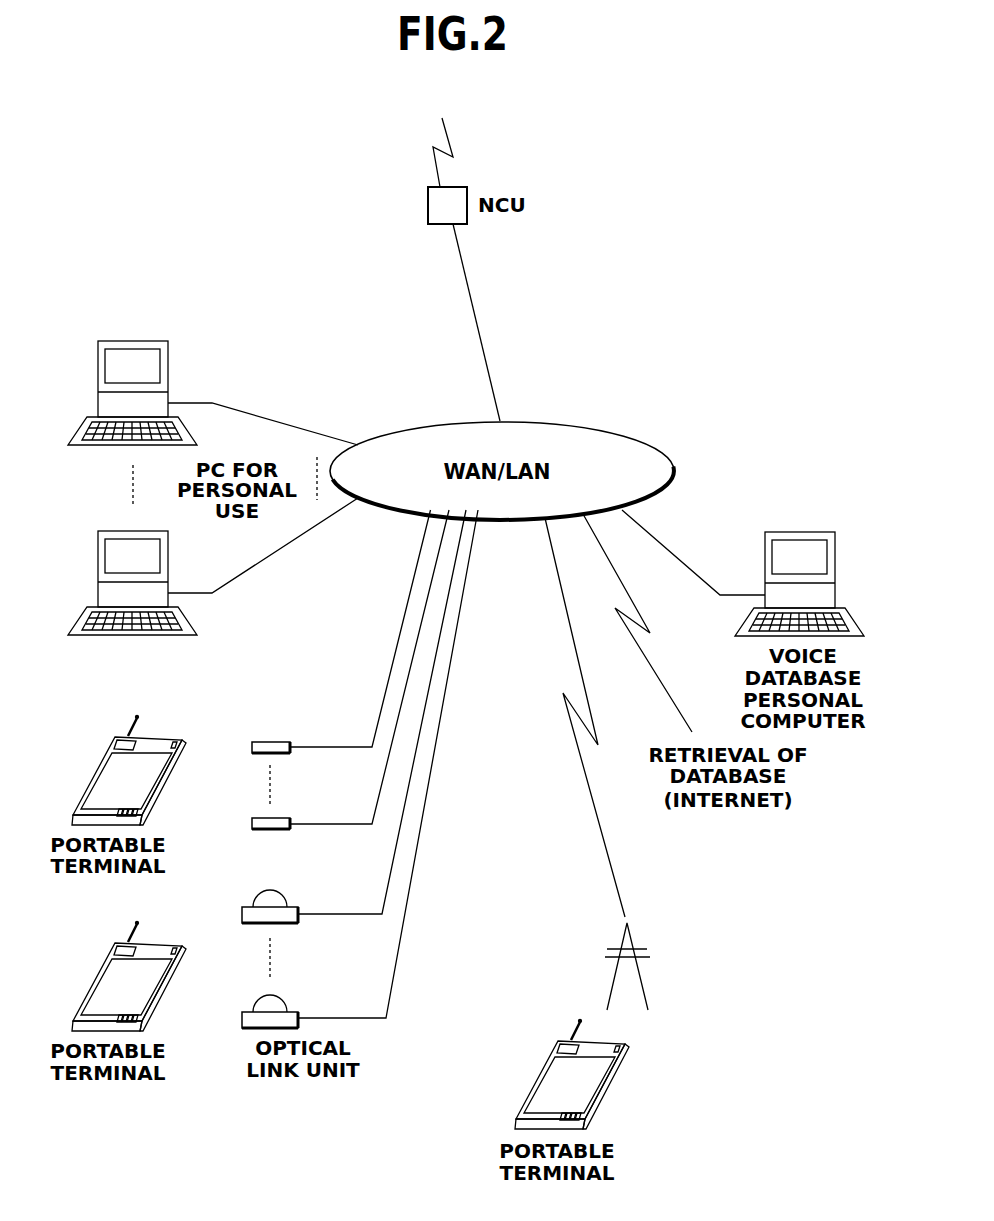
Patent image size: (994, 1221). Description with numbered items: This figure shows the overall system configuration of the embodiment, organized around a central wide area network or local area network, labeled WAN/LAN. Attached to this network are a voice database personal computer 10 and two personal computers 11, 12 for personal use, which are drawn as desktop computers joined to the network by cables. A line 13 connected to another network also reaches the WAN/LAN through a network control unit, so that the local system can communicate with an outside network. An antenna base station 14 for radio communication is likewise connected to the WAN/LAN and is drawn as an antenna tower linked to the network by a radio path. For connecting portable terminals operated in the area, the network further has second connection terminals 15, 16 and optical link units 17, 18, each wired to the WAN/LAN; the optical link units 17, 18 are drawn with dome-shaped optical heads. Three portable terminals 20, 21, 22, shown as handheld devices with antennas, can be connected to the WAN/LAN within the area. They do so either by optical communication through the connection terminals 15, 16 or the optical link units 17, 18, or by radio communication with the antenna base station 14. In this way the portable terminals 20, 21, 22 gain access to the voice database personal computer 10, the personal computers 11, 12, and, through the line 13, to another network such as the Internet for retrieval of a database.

The voice database personal computer 10 is at (800, 532).
The personal computer for personal use 11 is at (168, 367).
The personal computer for personal use 12 is at (168, 570).
The line 13 is at (487, 151).
The antenna base station 14 is at (632, 942).
The terminal 15 is at (283, 742).
The terminal 16 is at (283, 818).
The optical link unit 17 is at (302, 905).
The optical link unit 18 is at (302, 1010).
The portable terminal 20 is at (167, 772).
The portable terminal 21 is at (167, 978).
The portable terminal 22 is at (610, 1076).